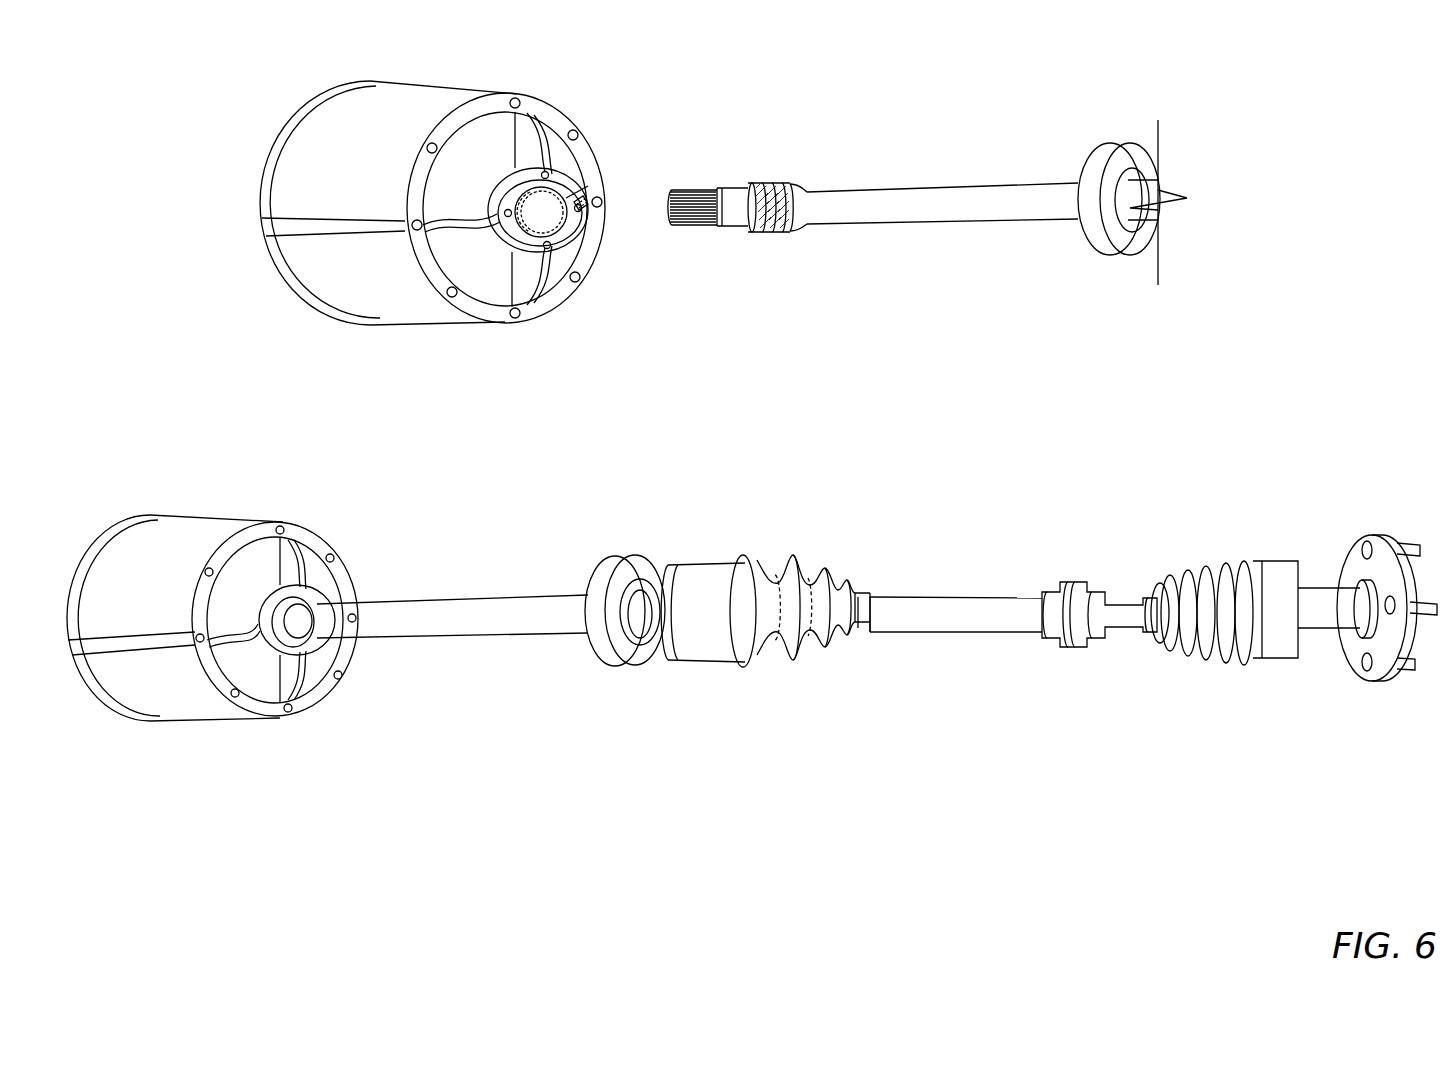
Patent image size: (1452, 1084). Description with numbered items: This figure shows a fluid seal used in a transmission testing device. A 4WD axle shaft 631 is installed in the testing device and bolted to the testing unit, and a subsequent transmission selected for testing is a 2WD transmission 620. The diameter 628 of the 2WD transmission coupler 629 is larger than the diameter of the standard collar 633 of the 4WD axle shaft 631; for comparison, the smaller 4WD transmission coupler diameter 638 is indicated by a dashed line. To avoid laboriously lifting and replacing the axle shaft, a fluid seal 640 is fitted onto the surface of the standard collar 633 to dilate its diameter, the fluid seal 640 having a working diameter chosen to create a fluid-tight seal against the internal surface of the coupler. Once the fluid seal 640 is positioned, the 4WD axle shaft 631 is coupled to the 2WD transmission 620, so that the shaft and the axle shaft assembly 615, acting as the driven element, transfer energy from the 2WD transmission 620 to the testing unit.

The axle shaft assembly 615 is at (972, 745).
The 2WD transmission 620 is at (267, 157).
The diameter of 2WD transmission coupler 628 is at (555, 247).
The 2WD transmission coupler 629 is at (555, 197).
The 4WD transmission coupler diameter 638 is at (563, 198).
The 4WD axle shaft 631 is at (960, 223).
The standard collar 633 is at (733, 228).
The fluid seal 640 is at (778, 183).